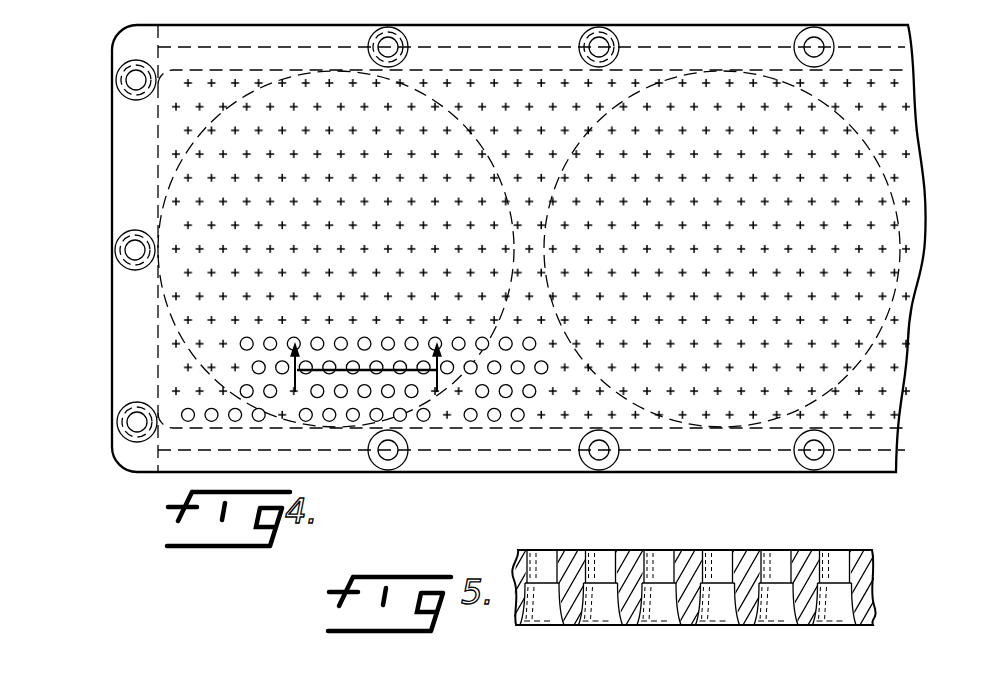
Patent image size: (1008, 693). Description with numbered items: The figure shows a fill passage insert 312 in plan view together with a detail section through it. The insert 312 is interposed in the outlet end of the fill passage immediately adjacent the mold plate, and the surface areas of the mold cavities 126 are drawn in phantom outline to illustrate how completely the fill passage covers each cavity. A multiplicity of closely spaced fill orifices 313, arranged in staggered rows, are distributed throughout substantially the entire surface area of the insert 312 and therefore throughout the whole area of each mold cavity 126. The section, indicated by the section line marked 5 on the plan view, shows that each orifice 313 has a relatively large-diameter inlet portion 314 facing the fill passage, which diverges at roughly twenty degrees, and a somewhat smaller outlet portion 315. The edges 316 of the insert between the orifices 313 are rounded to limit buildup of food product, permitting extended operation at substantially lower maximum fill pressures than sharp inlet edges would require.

In FIG. 4, the fill passage insert 312 is at (523, 4).
In FIG. 5, the fill passage insert 312 is at (865, 568).
In FIG. 4, the mold cavities 126 is at (176, 327).
In FIG. 4, the fill orifices 313 is at (481, 430).
In FIG. 4, the outlet portion 315 is at (211, 421).
In FIG. 5, the outlet portion 315 is at (663, 557).
In FIG. 5, the inlet portion 314 is at (662, 608).
In FIG. 5, the edges 316 is at (802, 625).
In FIG. 4, the section line 5- 5 is at (367, 382).